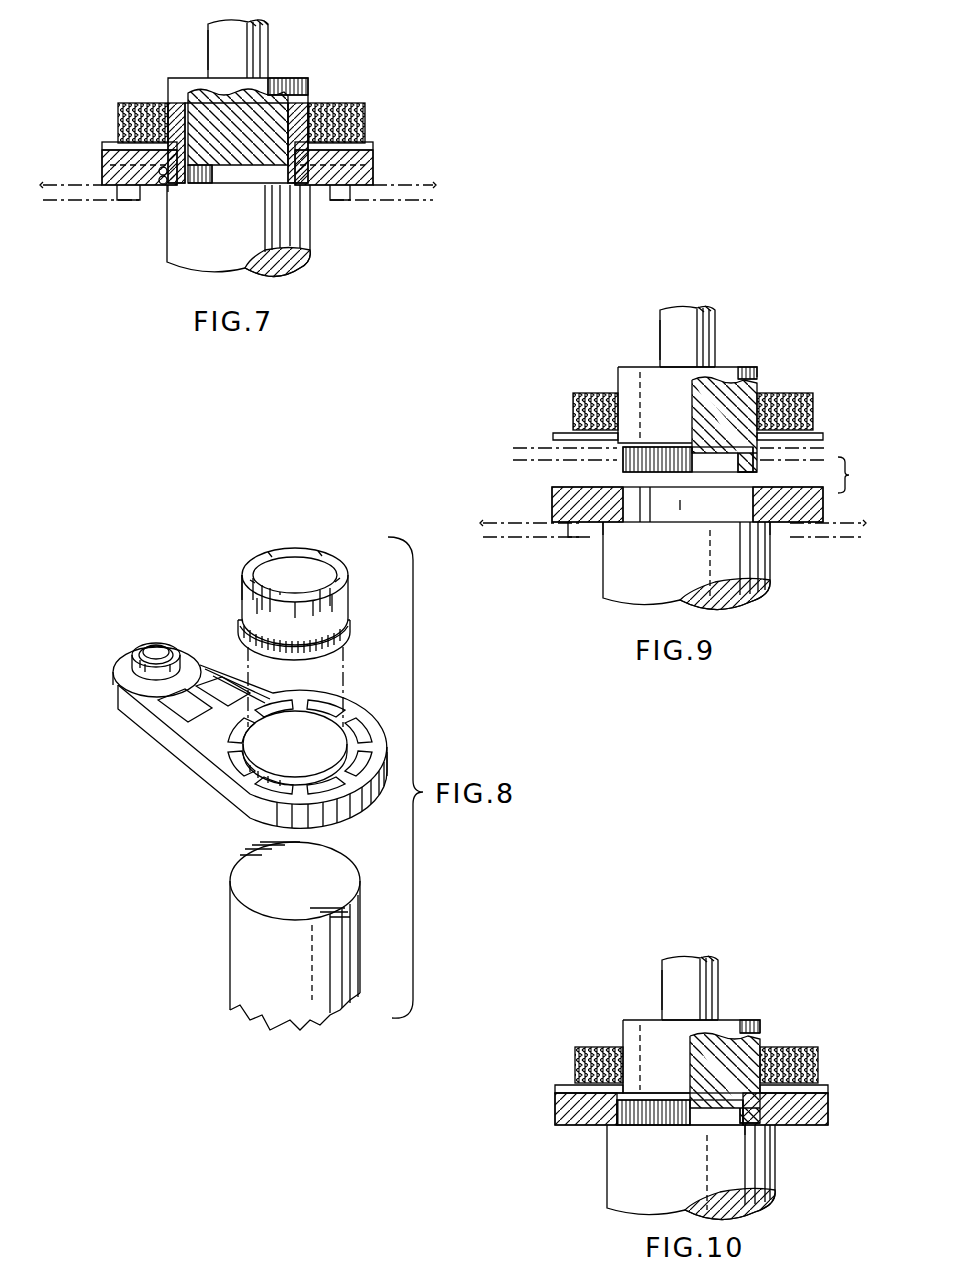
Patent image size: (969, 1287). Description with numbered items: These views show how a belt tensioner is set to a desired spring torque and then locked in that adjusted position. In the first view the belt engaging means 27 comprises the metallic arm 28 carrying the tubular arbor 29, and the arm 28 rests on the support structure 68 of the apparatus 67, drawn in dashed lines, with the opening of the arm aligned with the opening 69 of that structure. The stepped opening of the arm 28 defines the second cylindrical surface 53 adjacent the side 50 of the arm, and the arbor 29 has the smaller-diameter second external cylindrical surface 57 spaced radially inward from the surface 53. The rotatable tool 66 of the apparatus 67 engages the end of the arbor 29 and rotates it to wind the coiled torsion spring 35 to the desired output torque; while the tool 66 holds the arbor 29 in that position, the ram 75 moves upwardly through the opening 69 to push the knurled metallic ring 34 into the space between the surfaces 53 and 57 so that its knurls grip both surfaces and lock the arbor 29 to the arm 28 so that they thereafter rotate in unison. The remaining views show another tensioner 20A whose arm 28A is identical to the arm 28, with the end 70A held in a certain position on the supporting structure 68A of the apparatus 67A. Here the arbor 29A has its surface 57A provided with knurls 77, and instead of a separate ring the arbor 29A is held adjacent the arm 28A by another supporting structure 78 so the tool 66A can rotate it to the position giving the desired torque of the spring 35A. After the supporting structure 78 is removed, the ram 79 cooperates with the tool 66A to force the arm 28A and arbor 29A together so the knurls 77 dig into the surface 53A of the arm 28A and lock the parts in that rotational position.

In FIG. 9, the tensioner 20A is at (760, 332).
In FIG. 10, the tensioner 20A is at (767, 990).
In FIG. 8, the tensioner 20A is at (323, 538).
In FIG. 7, the belt engaging means 27 is at (373, 163).
In FIG. 7, the arm 28 is at (100, 163).
In FIG. 9, the arm 28A is at (552, 498).
In FIG. 10, the arm 28A is at (555, 1108).
In FIG. 8, the arm 28A is at (170, 753).
In FIG. 7, the arbor 29 is at (300, 118).
In FIG. 9, the arbor 29A is at (653, 403).
In FIG. 10, the arbor 29A is at (653, 1060).
In FIG. 8, the arbor 29A is at (250, 603).
In FIG. 7, the knurled metallic ring 34 is at (170, 181).
In FIG. 7, the coiled torsion spring 35 is at (365, 123).
In FIG. 9, the spring 35A is at (573, 407).
In FIG. 10, the spring 35A is at (575, 1057).
In FIG. 7, the side of the arm 50 is at (135, 190).
In FIG. 7, the second cylindrical surface 53 is at (163, 177).
In FIG. 9, the surface 53A is at (625, 494).
In FIG. 10, the surface 53A is at (745, 1110).
In FIG. 8, the surface 53A is at (313, 727).
In FIG. 7, the second external cylindrical surface 57 is at (162, 180).
In FIG. 9, the surface 57A is at (753, 467).
In FIG. 10, the surface 57A is at (647, 1120).
In FIG. 8, the surface 57A is at (333, 645).
In FIG. 7, the rotatable tool 66 is at (270, 57).
In FIG. 9, the tool 66A is at (757, 370).
In FIG. 10, the tool 66A is at (660, 978).
In FIG. 7, the apparatus 67 is at (208, 48).
In FIG. 9, the apparatus 67A is at (718, 308).
In FIG. 10, the apparatus 67A is at (720, 957).
In FIG. 7, the support structure 68 is at (407, 200).
In FIG. 9, the supporting structure 68A is at (568, 538).
In FIG. 7, the opening 69 is at (330, 200).
In FIG. 8, the end of the arm 70A is at (120, 665).
In FIG. 7, the ram 75 is at (175, 248).
In FIG. 9, the knurls 77 is at (623, 460).
In FIG. 10, the knurls 77 is at (670, 1117).
In FIG. 8, the knurls 77 is at (313, 662).
In FIG. 9, the supporting structure 78 is at (533, 443).
In FIG. 9, the ram 79 is at (763, 567).
In FIG. 10, the ram 79 is at (618, 1185).
In FIG. 8, the ram 79 is at (240, 942).